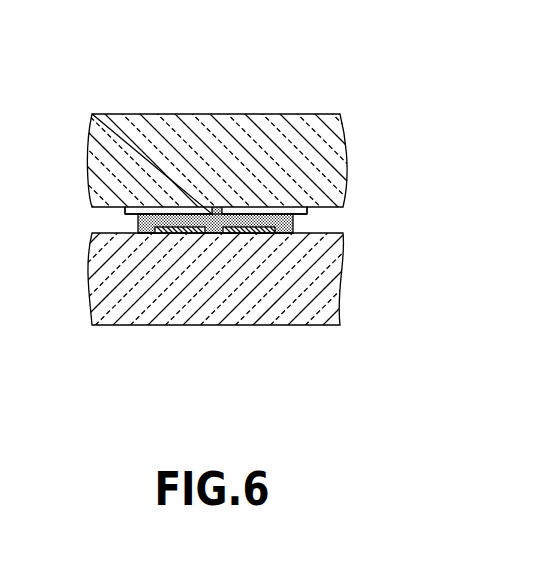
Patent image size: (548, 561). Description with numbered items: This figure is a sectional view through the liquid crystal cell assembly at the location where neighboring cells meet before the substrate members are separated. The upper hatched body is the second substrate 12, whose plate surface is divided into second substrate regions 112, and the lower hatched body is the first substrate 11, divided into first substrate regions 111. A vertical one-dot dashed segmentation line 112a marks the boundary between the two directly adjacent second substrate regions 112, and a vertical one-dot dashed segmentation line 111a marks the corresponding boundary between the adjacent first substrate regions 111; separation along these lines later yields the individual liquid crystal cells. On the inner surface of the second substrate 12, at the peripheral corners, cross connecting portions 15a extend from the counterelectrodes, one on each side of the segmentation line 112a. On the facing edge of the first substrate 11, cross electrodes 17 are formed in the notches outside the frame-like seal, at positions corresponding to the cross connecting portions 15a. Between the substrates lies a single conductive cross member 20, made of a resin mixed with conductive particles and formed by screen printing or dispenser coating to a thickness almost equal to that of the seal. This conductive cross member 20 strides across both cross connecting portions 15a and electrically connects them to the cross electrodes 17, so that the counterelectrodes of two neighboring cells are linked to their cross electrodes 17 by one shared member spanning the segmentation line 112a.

The second substrate region 112 is at (318, 172).
The second substrate 12 is at (246, 160).
The first substrate region 111 is at (317, 275).
The first substrate 11 is at (246, 280).
The segmentation line 112a is at (217, 207).
The segmentation line 111a is at (216, 233).
The cross connecting portion 15a is at (170, 207).
The conductive cross member 20 is at (293, 222).
The cross electrode 17 is at (172, 233).